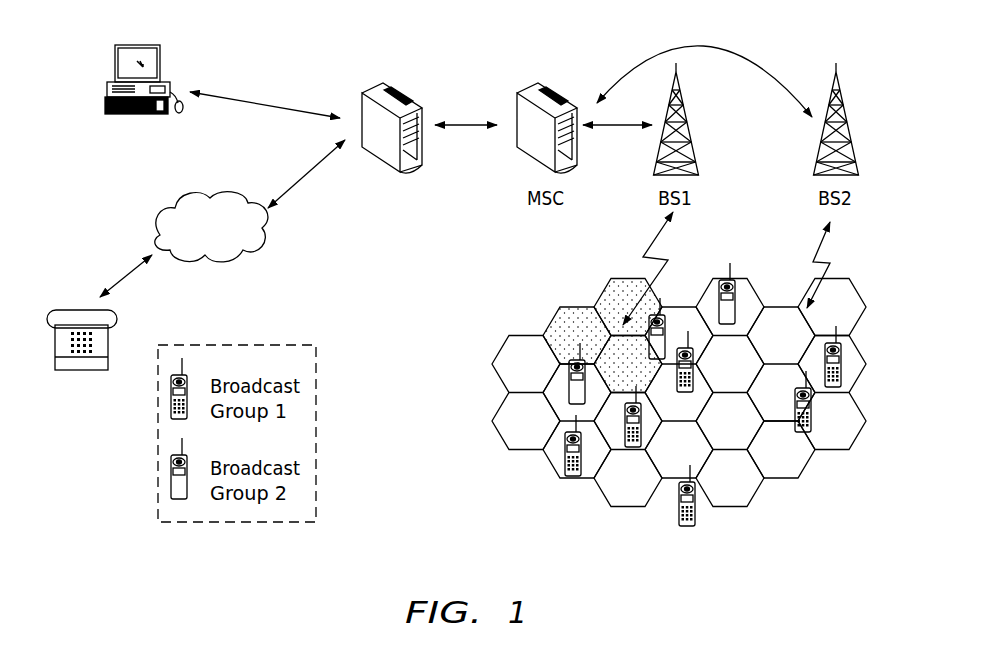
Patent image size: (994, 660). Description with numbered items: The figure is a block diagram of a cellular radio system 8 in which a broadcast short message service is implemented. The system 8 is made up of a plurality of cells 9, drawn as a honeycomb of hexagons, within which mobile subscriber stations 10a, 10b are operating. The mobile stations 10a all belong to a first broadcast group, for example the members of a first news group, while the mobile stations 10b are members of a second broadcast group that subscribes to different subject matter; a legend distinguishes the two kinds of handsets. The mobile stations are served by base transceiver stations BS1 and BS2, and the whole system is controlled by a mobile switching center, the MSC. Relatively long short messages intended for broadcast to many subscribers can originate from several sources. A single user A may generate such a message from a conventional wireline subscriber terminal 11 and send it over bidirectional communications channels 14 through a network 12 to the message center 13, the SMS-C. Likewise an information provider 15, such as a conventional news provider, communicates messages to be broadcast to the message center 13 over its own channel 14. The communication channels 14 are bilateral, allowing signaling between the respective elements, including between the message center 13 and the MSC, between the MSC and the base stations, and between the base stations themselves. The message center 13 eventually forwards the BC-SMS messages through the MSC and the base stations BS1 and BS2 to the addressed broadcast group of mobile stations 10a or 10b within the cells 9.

The cellular radio system 8 is at (650, 520).
The cells 9 is at (853, 287).
The mobile stations of broadcast group 1 10a is at (565, 468).
The mobile stations of broadcast group 2 10b is at (737, 303).
The wireline subscriber terminal 11 is at (112, 310).
The network 12 is at (252, 255).
The message center 13 is at (385, 83).
The bidirectional communications channels 14 is at (255, 98).
The information provider 15 is at (155, 45).